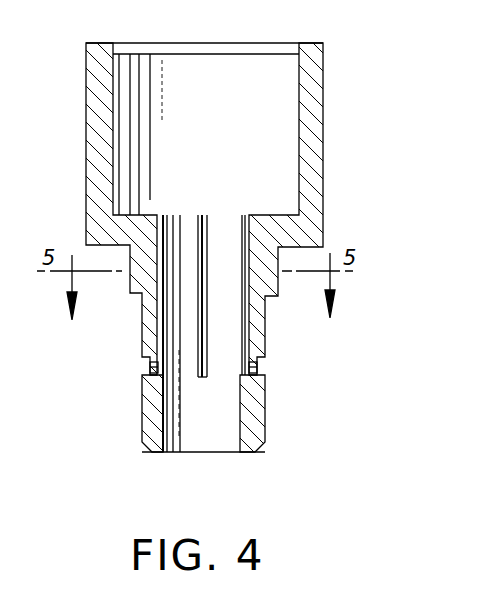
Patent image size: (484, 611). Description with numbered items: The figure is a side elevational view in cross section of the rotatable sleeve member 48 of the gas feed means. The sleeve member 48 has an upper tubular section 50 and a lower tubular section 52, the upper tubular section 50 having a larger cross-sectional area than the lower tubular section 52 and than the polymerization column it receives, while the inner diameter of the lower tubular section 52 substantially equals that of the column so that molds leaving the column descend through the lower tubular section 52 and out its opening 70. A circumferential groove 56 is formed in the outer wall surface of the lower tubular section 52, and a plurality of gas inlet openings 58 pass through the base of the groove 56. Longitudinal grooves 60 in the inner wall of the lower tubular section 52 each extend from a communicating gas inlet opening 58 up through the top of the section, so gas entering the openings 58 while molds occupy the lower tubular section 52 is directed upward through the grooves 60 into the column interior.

The rotatable sleeve member 48 is at (322, 150).
The upper tubular section 50 is at (318, 70).
The lower tubular section 52 is at (266, 420).
The circumferential groove 56 is at (148, 368).
The gas inlet openings 58 is at (258, 366).
The longitudinal grooves 60 is at (162, 236).
The opening 70 is at (215, 452).